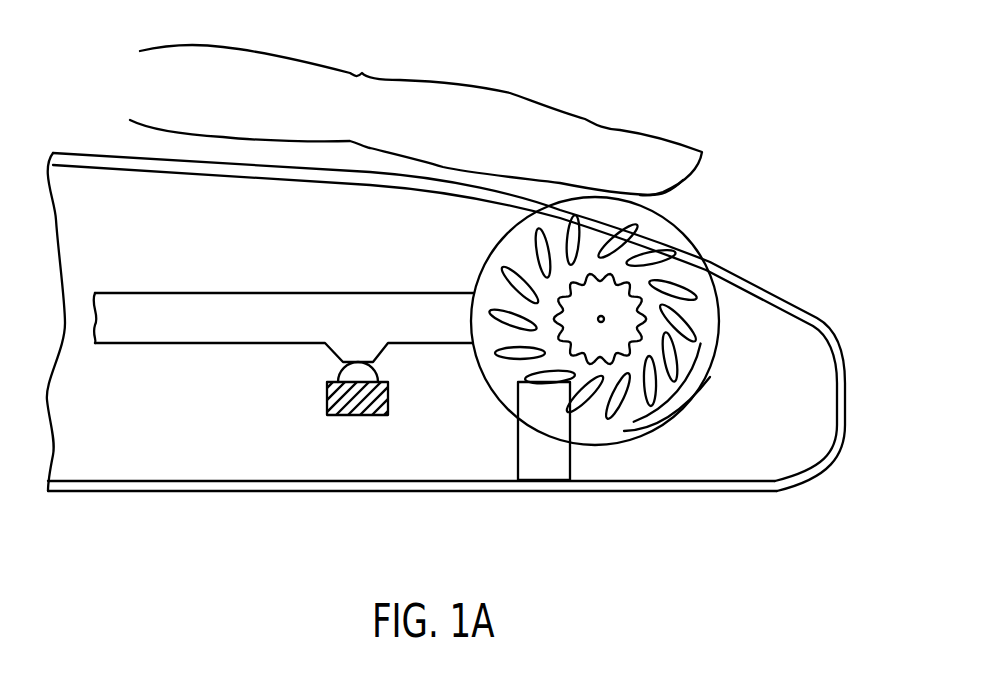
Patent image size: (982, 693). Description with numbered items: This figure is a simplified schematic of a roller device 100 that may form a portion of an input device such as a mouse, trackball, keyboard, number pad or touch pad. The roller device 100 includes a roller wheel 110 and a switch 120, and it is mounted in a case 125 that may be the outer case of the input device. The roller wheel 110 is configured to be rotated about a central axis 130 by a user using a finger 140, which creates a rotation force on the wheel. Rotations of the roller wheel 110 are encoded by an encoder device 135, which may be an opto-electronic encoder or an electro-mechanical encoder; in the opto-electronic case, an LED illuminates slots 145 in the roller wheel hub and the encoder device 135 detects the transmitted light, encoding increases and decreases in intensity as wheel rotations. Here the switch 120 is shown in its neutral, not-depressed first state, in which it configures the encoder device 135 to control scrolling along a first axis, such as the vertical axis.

The roller device 100 is at (176, 410).
The roller wheel 110 is at (707, 385).
The switch 120 is at (130, 288).
The case 125 is at (617, 492).
The central axis 130 is at (596, 325).
The encoder device 135 is at (516, 441).
The finger 140 is at (540, 90).
The slots 145 is at (718, 304).